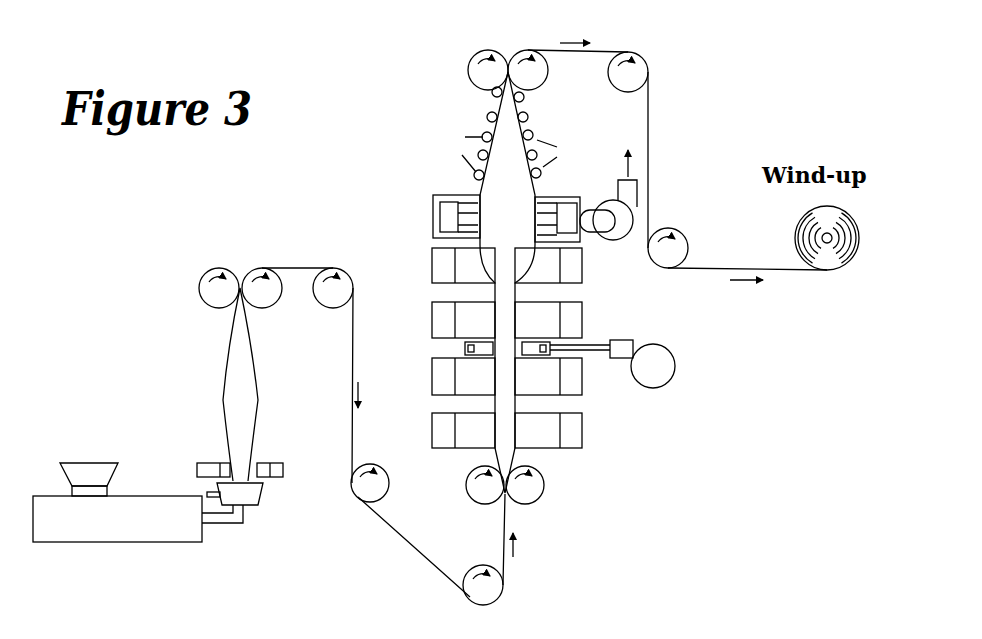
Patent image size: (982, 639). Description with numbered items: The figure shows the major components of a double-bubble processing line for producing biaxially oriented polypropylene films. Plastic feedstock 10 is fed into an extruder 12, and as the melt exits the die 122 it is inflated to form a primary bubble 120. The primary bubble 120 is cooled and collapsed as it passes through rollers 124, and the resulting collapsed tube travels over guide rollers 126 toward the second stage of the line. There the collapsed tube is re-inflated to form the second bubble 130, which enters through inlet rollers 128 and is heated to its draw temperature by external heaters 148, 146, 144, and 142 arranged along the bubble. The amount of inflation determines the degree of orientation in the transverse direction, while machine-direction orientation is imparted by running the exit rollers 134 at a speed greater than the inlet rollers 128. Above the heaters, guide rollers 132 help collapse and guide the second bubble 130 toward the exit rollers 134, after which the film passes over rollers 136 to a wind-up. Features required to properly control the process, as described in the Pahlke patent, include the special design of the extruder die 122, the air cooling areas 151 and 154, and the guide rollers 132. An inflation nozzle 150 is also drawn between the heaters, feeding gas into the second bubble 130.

The plastic feedstock 10 is at (88, 458).
The extruder 12 is at (138, 519).
The primary bubble 120 is at (247, 395).
The die 122 is at (271, 476).
The rollers 124 is at (208, 297).
The guide rollers 126 is at (328, 274).
The inlet rollers 128 is at (471, 499).
The bubble 130 is at (588, 321).
The guide rollers 132 is at (511, 133).
The exit rollers 134 is at (481, 61).
The guide rollers 136 is at (641, 59).
The external heater 142 is at (443, 267).
The external heater 144 is at (442, 327).
The external heater 146 is at (443, 380).
The external heater 148 is at (443, 432).
The nozzle 150 is at (540, 352).
The air cooling area 151 is at (675, 366).
The air cooling area 154 is at (427, 207).